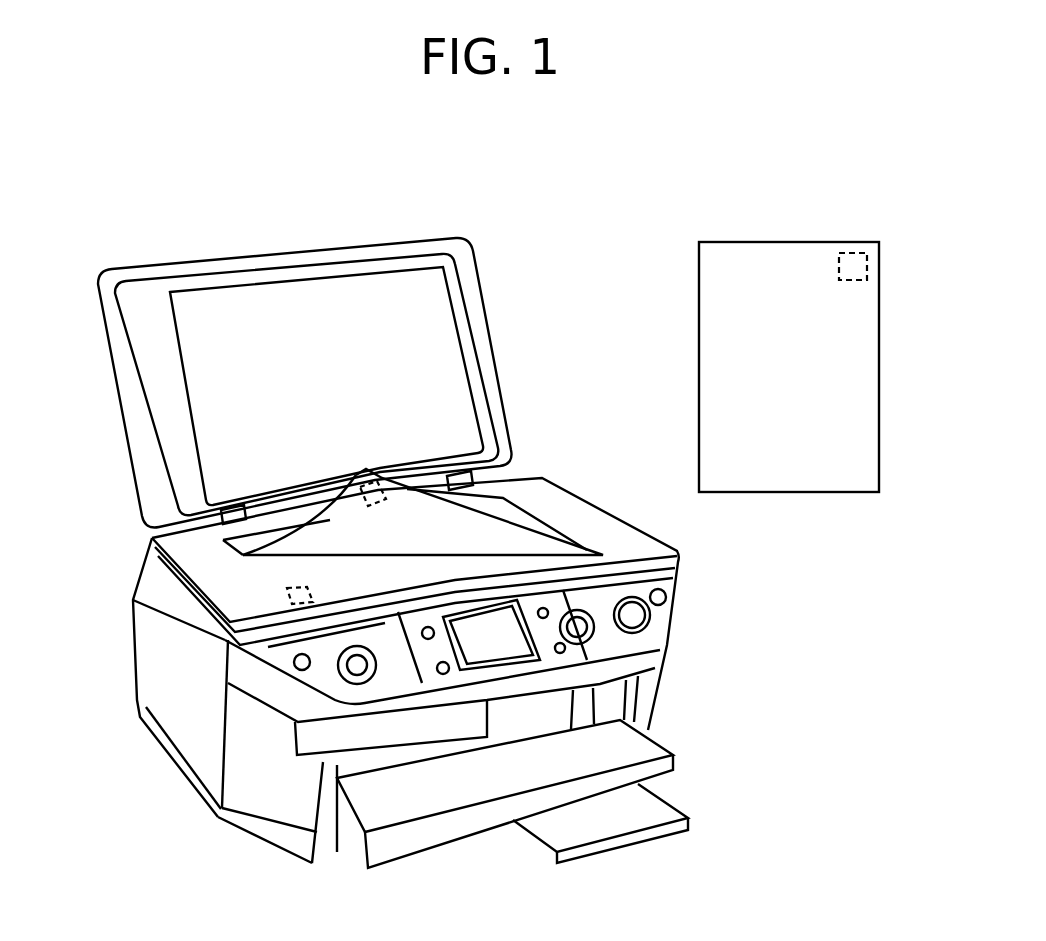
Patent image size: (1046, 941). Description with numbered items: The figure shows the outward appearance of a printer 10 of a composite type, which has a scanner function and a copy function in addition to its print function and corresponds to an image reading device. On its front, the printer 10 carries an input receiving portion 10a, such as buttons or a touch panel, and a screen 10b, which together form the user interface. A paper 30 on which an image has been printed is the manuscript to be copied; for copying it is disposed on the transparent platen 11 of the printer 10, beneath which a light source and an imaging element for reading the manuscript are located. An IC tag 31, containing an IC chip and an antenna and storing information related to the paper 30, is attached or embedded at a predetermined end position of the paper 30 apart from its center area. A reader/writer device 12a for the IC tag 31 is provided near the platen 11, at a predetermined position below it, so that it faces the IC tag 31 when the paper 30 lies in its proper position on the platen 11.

The printer 10 is at (262, 843).
The input receiving portion 10a is at (360, 676).
The screen 10b is at (585, 637).
The platen 11 is at (525, 645).
The reader/writer device 12a is at (285, 590).
The paper 30 is at (339, 524).
The IC tag 31 is at (380, 487).